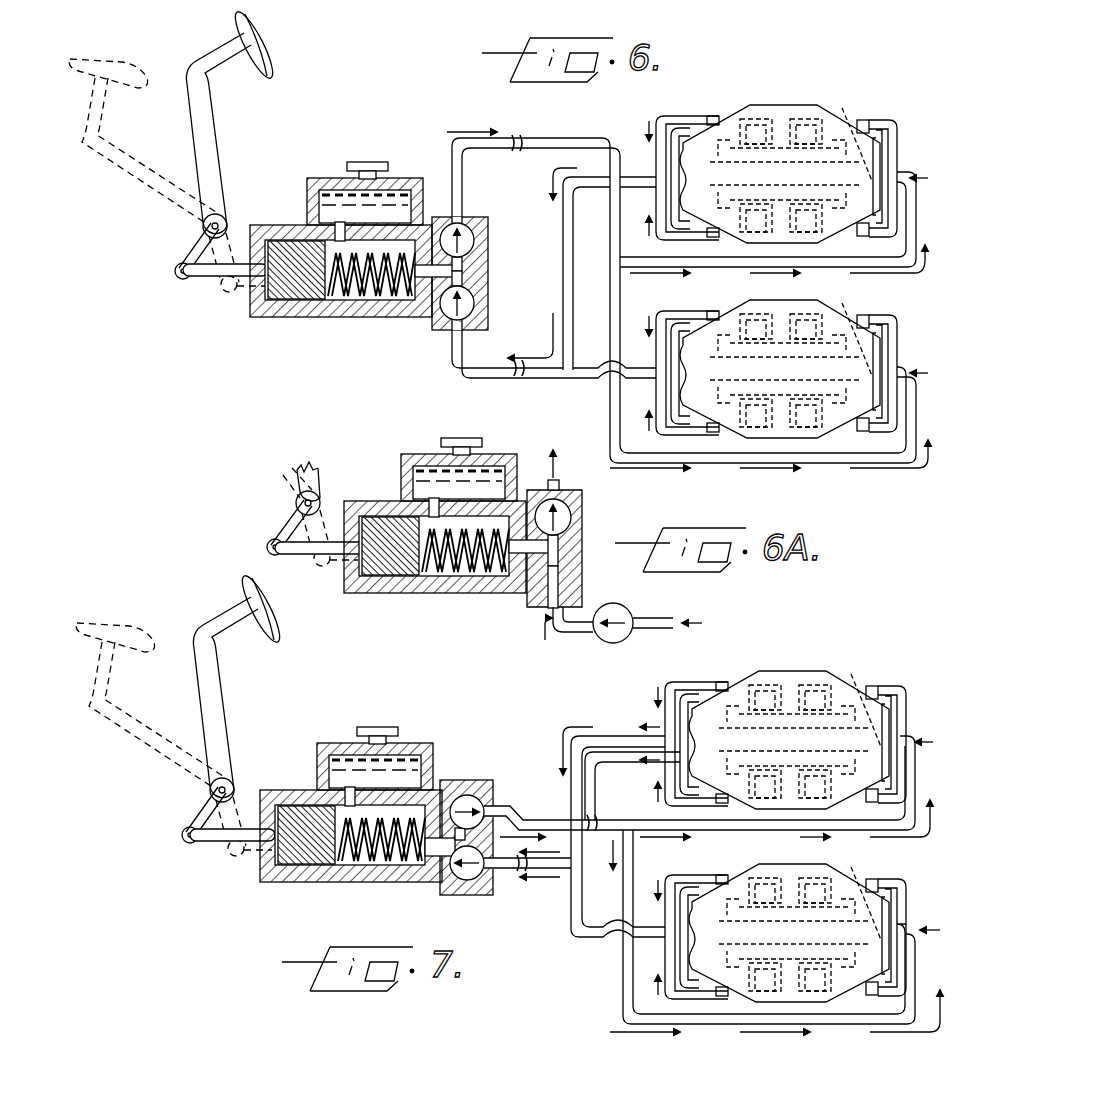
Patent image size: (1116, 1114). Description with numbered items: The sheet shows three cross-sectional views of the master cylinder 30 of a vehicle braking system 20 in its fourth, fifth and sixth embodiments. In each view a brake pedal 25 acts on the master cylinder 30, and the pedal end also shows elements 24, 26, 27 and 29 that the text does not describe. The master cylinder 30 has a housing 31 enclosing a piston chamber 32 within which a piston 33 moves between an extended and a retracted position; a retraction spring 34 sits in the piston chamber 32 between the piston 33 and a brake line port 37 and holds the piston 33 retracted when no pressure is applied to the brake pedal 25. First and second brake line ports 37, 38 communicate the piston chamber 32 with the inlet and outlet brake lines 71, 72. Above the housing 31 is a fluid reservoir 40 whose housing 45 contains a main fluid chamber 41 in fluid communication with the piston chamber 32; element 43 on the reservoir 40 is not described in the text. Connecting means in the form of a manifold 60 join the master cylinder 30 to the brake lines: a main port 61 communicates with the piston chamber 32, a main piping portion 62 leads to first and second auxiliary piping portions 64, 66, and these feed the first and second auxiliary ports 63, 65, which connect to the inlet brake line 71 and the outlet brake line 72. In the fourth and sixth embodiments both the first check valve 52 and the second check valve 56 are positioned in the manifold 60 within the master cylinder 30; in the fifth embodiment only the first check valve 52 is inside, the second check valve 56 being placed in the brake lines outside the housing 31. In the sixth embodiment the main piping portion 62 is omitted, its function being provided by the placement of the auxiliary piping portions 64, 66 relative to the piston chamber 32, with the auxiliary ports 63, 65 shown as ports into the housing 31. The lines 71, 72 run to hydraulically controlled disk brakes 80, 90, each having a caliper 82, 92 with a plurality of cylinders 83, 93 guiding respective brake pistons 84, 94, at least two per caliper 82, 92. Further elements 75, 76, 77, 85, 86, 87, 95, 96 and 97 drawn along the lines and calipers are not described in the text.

In FIG. 6, the braking system 20 is at (446, 104).
In FIG. 7, the braking system 20 is at (492, 710).
In FIG. 7, the push rod 24 is at (205, 845).
In FIG. 6, the brake pedal 25 is at (272, 56).
In FIG. 7, the brake pedal 25 is at (278, 618).
In FIG. 6, the pedal lever 26 is at (210, 104).
In FIG. 6A, the pedal lever 26 is at (320, 514).
In FIG. 7, the pedal lever 26 is at (214, 675).
In FIG. 6, the link 27 is at (190, 240).
In FIG. 6A, the link 27 is at (289, 527).
In FIG. 7, the link 27 is at (200, 808).
In FIG. 6, the push rod 29 is at (200, 276).
In FIG. 6A, the push rod 29 is at (321, 548).
In FIG. 6, the master cylinder 30 is at (256, 172).
In FIG. 6A, the master cylinder 30 is at (342, 475).
In FIG. 7, the master cylinder 30 is at (252, 755).
In FIG. 6, the housing 31 is at (270, 225).
In FIG. 6A, the housing 31 is at (360, 500).
In FIG. 7, the housing 31 is at (275, 790).
In FIG. 6, the piston chamber 32 is at (380, 297).
In FIG. 6A, the piston chamber 32 is at (450, 575).
In FIG. 7, the piston chamber 32 is at (380, 862).
In FIG. 6, the piston 33 is at (268, 296).
In FIG. 6A, the piston 33 is at (390, 546).
In FIG. 7, the piston 33 is at (272, 870).
In FIG. 6, the retraction spring 34 is at (330, 315).
In FIG. 6A, the retraction spring 34 is at (410, 590).
In FIG. 7, the retraction spring 34 is at (330, 882).
In FIG. 7, the first brake line port 37 is at (435, 790).
In FIG. 7, the second brake line port 38 is at (432, 882).
In FIG. 6, the fluid reservoir 40 is at (341, 162).
In FIG. 6A, the fluid reservoir 40 is at (370, 472).
In FIG. 7, the fluid reservoir 40 is at (316, 745).
In FIG. 6, the main fluid chamber 41 is at (392, 190).
In FIG. 6A, the main fluid chamber 41 is at (425, 470).
In FIG. 7, the main fluid chamber 41 is at (338, 750).
In FIG. 6, the filler cap 43 is at (378, 160).
In FIG. 6A, the filler cap 43 is at (466, 438).
In FIG. 7, the filler cap 43 is at (385, 733).
In FIG. 6, the reservoir housing 45 is at (413, 205).
In FIG. 6A, the reservoir housing 45 is at (508, 470).
In FIG. 7, the reservoir housing 45 is at (432, 765).
In FIG. 6, the first check valve 52 is at (488, 225).
In FIG. 6A, the first check valve 52 is at (582, 496).
In FIG. 7, the first check valve 52 is at (493, 790).
In FIG. 6, the second check valve 56 is at (474, 303).
In FIG. 6A, the second check valve 56 is at (628, 606).
In FIG. 7, the second check valve 56 is at (478, 880).
In FIG. 6, the manifold 60 is at (402, 322).
In FIG. 6A, the manifold 60 is at (475, 598).
In FIG. 7, the manifold 60 is at (402, 900).
In FIG. 6, the main port 61 is at (452, 212).
In FIG. 6A, the main port 61 is at (547, 484).
In FIG. 6, the main piping portion 62 is at (430, 318).
In FIG. 6A, the main piping portion 62 is at (518, 590).
In FIG. 6, the first auxiliary port 63 is at (468, 216).
In FIG. 6A, the first auxiliary port 63 is at (560, 492).
In FIG. 7, the first auxiliary port 63 is at (484, 810).
In FIG. 6, the first auxiliary piping portion 64 is at (470, 262).
In FIG. 6A, the first auxiliary piping portion 64 is at (575, 540).
In FIG. 7, the first auxiliary piping portion 64 is at (470, 795).
In FIG. 6, the second auxiliary port 65 is at (463, 322).
In FIG. 6A, the second auxiliary port 65 is at (565, 600).
In FIG. 6, the second auxiliary piping portion 66 is at (462, 275).
In FIG. 6A, the second auxiliary piping portion 66 is at (570, 565).
In FIG. 7, the second auxiliary piping portion 66 is at (462, 880).
In FIG. 7, the inlet brake line 71 is at (628, 828).
In FIG. 6, the outlet brake line 72 is at (527, 380).
In FIG. 7, the outlet brake line 72 is at (611, 738).
In FIG. 6, the bleeder fitting 75 is at (890, 140).
In FIG. 7, the bleeder fitting 75 is at (905, 708).
In FIG. 6, the brake line 76 is at (655, 158).
In FIG. 7, the brake line 76 is at (666, 700).
In FIG. 6, the brake line 77 is at (562, 140).
In FIG. 6, the disk brake 80 is at (878, 462).
In FIG. 7, the disk brake 80 is at (840, 1048).
In FIG. 6, the caliper 82 is at (700, 320).
In FIG. 7, the caliper 82 is at (706, 885).
In FIG. 6, the cylinders 83 is at (830, 315).
In FIG. 7, the cylinders 83 is at (755, 878).
In FIG. 6, the brake pistons 84 is at (785, 305).
In FIG. 7, the brake pistons 84 is at (800, 878).
In FIG. 6, the fitting 85 is at (865, 310).
In FIG. 7, the fitting 85 is at (876, 885).
In FIG. 6, the caliper body 86 is at (720, 380).
In FIG. 7, the caliper body 86 is at (728, 945).
In FIG. 6, the fitting 87 is at (745, 305).
In FIG. 7, the fitting 87 is at (838, 878).
In FIG. 6, the disk brake 90 is at (832, 75).
In FIG. 7, the disk brake 90 is at (870, 652).
In FIG. 6, the caliper 92 is at (706, 160).
In FIG. 7, the caliper 92 is at (712, 700).
In FIG. 6, the cylinders 93 is at (772, 120).
In FIG. 7, the cylinders 93 is at (782, 665).
In FIG. 6, the brake pistons 94 is at (795, 120).
In FIG. 7, the brake pistons 94 is at (780, 672).
In FIG. 6, the fitting 95 is at (866, 118).
In FIG. 7, the fitting 95 is at (883, 687).
In FIG. 6, the caliper body 96 is at (725, 160).
In FIG. 7, the caliper body 96 is at (735, 715).
In FIG. 6, the fitting 97 is at (860, 118).
In FIG. 7, the fitting 97 is at (872, 690).